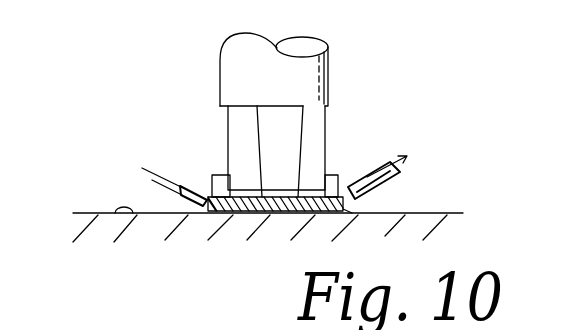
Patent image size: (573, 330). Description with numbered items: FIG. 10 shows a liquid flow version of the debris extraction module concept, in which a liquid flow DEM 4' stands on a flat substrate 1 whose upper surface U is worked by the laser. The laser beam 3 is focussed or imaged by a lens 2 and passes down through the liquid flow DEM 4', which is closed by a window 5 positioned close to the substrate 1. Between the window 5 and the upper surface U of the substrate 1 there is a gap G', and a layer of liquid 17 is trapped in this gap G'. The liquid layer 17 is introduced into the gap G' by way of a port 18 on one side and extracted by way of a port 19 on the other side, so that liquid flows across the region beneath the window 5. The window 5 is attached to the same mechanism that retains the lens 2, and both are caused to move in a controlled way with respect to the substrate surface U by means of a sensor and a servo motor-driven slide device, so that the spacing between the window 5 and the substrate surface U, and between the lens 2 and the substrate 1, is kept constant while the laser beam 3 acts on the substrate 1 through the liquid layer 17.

The substrate 1 is at (418, 207).
The lens 2 is at (333, 52).
The laser beam 3 is at (262, 122).
The liquid flow DEM 4' is at (368, 78).
The window 5 is at (303, 192).
The layer of liquid 17 is at (240, 214).
The port 18 is at (162, 170).
The port 19 is at (420, 173).
The upper surface of substrate U is at (112, 217).
The gap G' is at (369, 236).